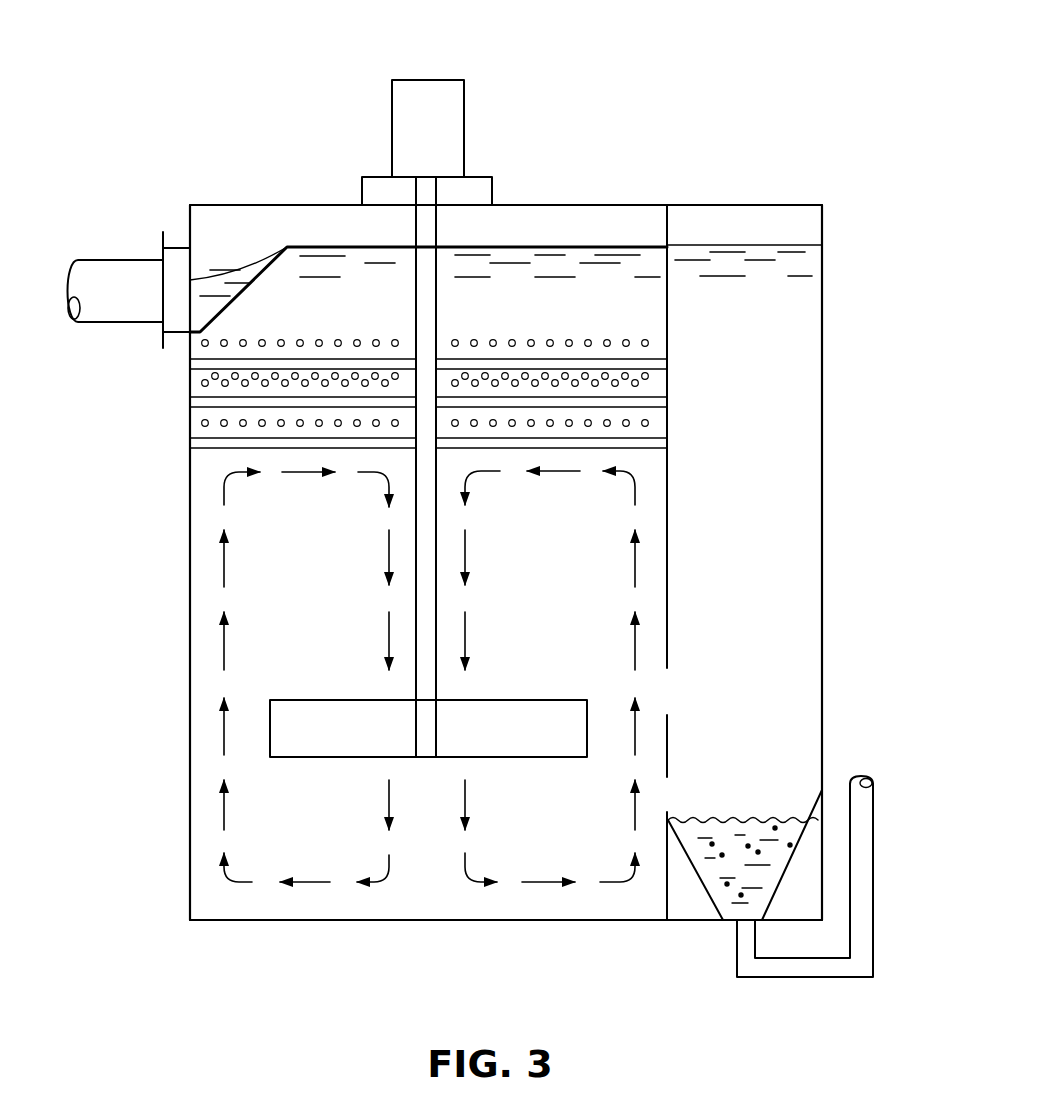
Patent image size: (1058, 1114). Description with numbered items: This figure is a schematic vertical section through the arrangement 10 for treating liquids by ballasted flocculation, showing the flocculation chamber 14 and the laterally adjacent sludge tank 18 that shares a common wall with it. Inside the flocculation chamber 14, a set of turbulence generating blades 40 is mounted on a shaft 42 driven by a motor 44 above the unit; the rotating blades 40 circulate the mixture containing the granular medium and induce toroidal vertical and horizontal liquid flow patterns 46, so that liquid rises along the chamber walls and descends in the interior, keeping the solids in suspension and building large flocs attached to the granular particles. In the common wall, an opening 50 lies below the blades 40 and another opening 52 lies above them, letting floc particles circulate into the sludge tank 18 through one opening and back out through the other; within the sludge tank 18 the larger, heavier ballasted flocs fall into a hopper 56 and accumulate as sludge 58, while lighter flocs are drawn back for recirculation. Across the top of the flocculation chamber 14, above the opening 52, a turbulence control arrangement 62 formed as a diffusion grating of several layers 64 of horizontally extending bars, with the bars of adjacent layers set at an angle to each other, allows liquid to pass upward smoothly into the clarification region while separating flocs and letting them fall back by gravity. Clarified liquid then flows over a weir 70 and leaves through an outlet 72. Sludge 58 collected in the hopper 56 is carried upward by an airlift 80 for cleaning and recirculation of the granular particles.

The arrangement for treatment of liquids 10 is at (165, 147).
The flocculation chamber 14 is at (186, 672).
The sludge tank 18 is at (826, 441).
The turbulence generating blades 40 is at (282, 743).
The shaft 42 is at (415, 588).
The motor 44 is at (424, 90).
The liquid flow patterns 46 is at (223, 488).
The opening 50 is at (668, 793).
The opening 52 is at (668, 687).
The hopper 56 is at (788, 862).
The sludge 58 is at (720, 888).
The turbulence control arrangement 62 is at (187, 393).
The layers 64 is at (203, 344).
The weir 70 is at (260, 273).
The outlet 72 is at (115, 268).
The airlift 80 is at (818, 977).